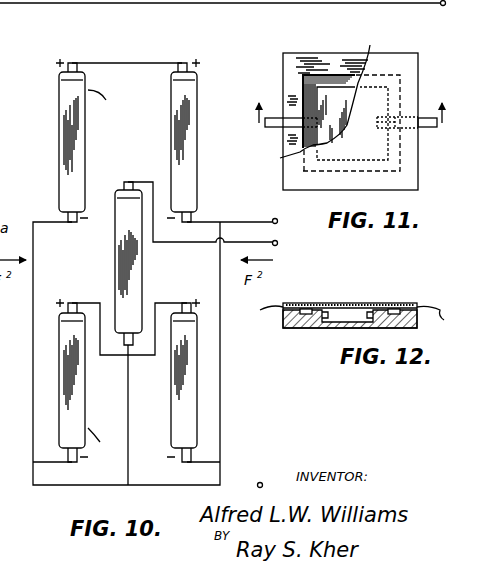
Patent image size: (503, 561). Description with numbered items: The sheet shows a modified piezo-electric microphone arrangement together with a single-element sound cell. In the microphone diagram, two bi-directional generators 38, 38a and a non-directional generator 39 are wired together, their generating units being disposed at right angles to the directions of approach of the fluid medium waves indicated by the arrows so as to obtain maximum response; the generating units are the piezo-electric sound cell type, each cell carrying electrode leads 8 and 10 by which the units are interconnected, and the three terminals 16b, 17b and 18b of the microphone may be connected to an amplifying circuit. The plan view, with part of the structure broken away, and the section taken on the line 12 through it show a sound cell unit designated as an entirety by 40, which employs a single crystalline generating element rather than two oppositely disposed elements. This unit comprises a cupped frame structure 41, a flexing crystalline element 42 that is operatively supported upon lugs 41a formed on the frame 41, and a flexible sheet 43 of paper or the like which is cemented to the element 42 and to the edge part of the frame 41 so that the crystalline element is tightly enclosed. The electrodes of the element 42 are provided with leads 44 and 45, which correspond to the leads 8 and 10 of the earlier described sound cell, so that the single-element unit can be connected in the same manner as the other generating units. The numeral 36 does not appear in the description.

In FIG. 10, the lead 8 is at (130, 182).
In FIG. 10, the lead 10 is at (126, 63).
In FIG. 11, the section line 12 is at (352, 102).
In FIG. 10, the terminal 16b is at (275, 218).
In FIG. 10, the terminal 17b is at (277, 243).
In FIG. 10, the terminal 18b is at (262, 481).
In FIG. 10, the cell 36 is at (59, 125).
In FIG. 10, the bi-directional generator 38 is at (163, 95).
In FIG. 10, the bi-directional generator 38a is at (165, 436).
In FIG. 10, the non-directional generator 39 is at (115, 262).
In FIG. 11, the sound cell unit 40 is at (320, 53).
In FIG. 12, the sound cell unit 40 is at (403, 301).
In FIG. 11, the cupped frame structure 41 is at (355, 58).
In FIG. 12, the cupped frame structure 41 is at (292, 330).
In FIG. 11, the lugs 41a is at (426, 174).
In FIG. 12, the lugs 41a is at (436, 346).
In FIG. 11, the flexing crystalline element 42 is at (335, 85).
In FIG. 12, the flexing crystalline element 42 is at (354, 302).
In FIG. 11, the flexible sheet 43 is at (375, 58).
In FIG. 12, the flexible sheet 43 is at (310, 302).
In FIG. 11, the lead 44 is at (273, 127).
In FIG. 12, the lead 44 is at (261, 320).
In FIG. 11, the lead 45 is at (429, 127).
In FIG. 12, the lead 45 is at (435, 321).